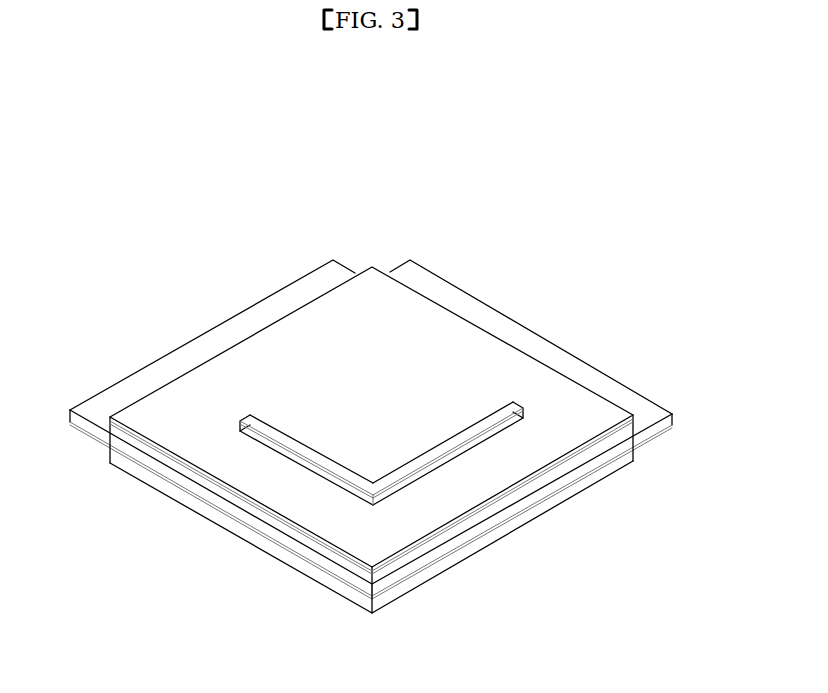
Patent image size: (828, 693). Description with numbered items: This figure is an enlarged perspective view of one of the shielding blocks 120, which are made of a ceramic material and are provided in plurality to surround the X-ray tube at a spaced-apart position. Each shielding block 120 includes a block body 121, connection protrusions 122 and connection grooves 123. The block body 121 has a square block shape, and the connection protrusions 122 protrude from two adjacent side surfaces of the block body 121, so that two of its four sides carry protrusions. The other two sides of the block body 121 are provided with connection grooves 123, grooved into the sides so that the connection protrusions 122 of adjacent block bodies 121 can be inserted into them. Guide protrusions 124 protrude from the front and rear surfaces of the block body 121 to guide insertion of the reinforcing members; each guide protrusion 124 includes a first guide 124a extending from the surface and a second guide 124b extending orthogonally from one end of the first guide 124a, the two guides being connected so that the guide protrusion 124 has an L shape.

The shielding block 120 is at (397, 140).
The block body 121 is at (560, 393).
The connection protrusions 122 is at (412, 279).
The connection grooves 123 is at (329, 565).
The guide protrusions 124 is at (580, 280).
The first guide 124a is at (313, 458).
The second guide 124b is at (512, 403).